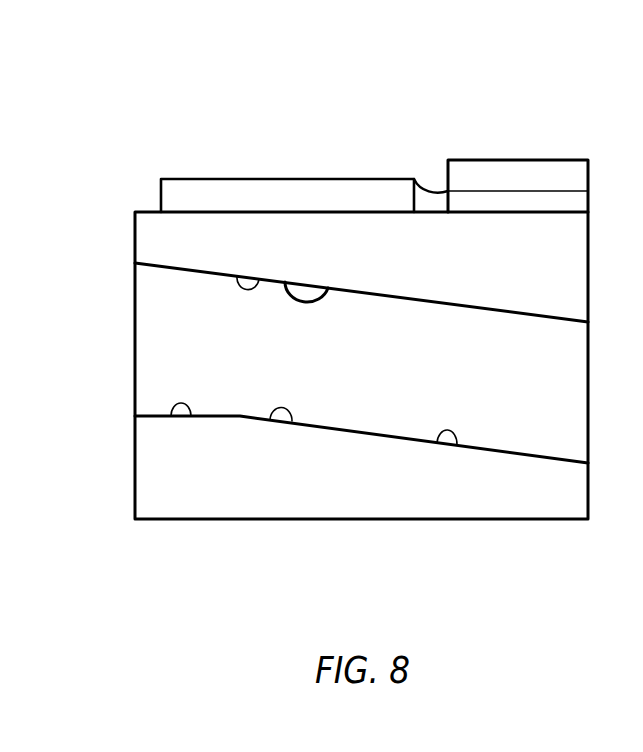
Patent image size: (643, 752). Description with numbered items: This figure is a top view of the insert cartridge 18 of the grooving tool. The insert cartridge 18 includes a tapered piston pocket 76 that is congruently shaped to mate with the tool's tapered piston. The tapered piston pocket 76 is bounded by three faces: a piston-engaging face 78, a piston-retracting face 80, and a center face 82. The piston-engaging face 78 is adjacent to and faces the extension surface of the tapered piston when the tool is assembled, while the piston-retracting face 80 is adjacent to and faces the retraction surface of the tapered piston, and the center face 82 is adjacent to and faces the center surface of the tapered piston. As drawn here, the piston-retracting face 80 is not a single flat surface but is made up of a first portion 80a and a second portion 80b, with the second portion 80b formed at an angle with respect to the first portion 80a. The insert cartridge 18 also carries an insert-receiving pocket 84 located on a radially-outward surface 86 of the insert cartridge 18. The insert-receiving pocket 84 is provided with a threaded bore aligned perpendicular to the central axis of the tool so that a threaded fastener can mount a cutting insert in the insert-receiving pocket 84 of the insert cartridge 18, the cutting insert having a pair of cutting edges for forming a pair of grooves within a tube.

The insert cartridge 18 is at (100, 64).
The tapered piston pocket 76 is at (152, 303).
The piston-engaging face 78 is at (243, 289).
The piston-retracting face 80 is at (290, 419).
The first portion 80a is at (190, 416).
The second portion 80b is at (455, 443).
The center face 82 is at (175, 355).
The insert-receiving pocket 84 is at (311, 188).
The radially-outward surface 86 is at (500, 168).